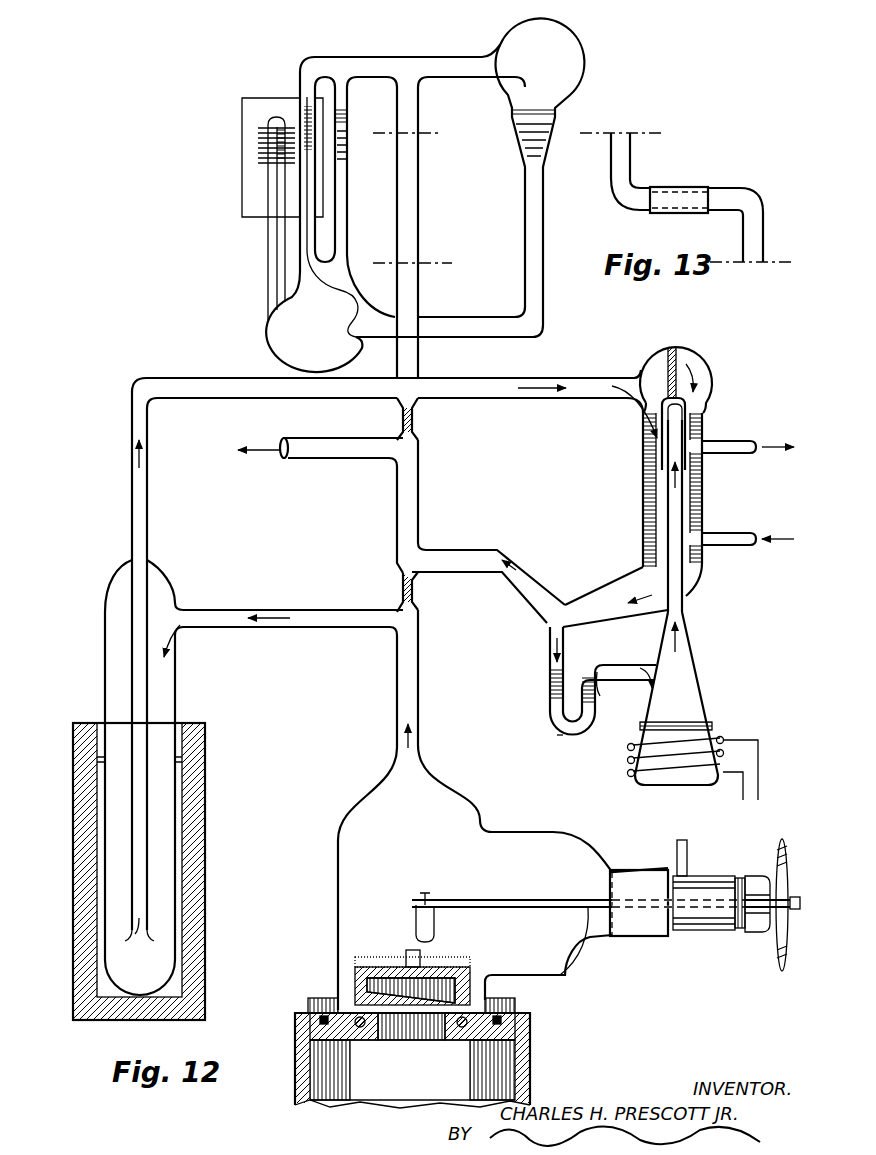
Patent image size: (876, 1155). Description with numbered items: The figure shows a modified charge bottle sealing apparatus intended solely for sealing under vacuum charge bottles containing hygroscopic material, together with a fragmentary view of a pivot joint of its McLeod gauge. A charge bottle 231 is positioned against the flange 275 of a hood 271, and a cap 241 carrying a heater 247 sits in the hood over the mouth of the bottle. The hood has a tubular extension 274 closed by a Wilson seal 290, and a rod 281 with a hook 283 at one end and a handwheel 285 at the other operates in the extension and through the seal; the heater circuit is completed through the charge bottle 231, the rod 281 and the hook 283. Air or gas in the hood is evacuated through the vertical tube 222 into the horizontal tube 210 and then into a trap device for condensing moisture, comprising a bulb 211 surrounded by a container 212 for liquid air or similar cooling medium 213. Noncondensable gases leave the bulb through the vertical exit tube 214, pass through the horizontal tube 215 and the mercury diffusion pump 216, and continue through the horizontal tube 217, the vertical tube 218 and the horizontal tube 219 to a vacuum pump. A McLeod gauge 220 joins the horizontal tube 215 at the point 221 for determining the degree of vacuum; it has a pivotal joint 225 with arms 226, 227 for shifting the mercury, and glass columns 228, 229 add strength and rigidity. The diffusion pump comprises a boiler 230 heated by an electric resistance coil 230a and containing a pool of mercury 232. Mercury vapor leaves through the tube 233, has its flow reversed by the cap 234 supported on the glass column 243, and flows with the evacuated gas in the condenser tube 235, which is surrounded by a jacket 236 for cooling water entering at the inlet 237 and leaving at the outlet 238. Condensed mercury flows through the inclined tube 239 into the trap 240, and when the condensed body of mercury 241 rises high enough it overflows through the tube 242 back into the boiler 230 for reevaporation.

In FIG. 12, the horizontal tube 210 is at (282, 630).
In FIG. 12, the bulb 211 is at (168, 658).
In FIG. 12, the container 212 is at (197, 757).
In FIG. 12, the cooling medium 213 is at (180, 773).
In FIG. 12, the vertical exit tube 214 is at (150, 595).
In FIG. 12, the horizontal tube 215 is at (205, 395).
In FIG. 12, the mercury diffusion pump 216 is at (712, 377).
In FIG. 12, the horizontal tube 217 is at (470, 553).
In FIG. 12, the vertical tube 218 is at (414, 490).
In FIG. 12, the horizontal tube 219 is at (335, 460).
In FIG. 12, the McLeod gauge 220 is at (290, 86).
In FIG. 12, the point 221 is at (426, 376).
In FIG. 12, the vertical tube 222 is at (420, 668).
In FIG. 12, the pivotal joint 225 is at (412, 203).
In FIG. 13, the pivotal joint 225 is at (683, 187).
In FIG. 12, the arm of the joint 226 is at (412, 160).
In FIG. 13, the arm of the joint 226 is at (628, 150).
In FIG. 12, the arm of the joint 227 is at (412, 241).
In FIG. 13, the arm of the joint 227 is at (740, 188).
In FIG. 12, the glass column 228 is at (414, 430).
In FIG. 12, the glass column 229 is at (414, 596).
In FIG. 12, the boiler 230 is at (700, 690).
In FIG. 12, the electric resistance coil 230a is at (628, 756).
In FIG. 12, the charge bottle 231 is at (535, 1068).
In FIG. 12, the pool of mercury 232 is at (693, 725).
In FIG. 12, the tube 233 is at (690, 603).
In FIG. 12, the cap 234 is at (700, 396).
In FIG. 12, the condenser tube 235 is at (648, 468).
In FIG. 12, the jacket 236 is at (700, 480).
In FIG. 12, the inlet 237 is at (728, 533).
In FIG. 12, the outlet 238 is at (720, 440).
In FIG. 12, the inclined tube 239 is at (596, 603).
In FIG. 12, the trap 240 is at (550, 704).
In FIG. 12, the cap 241 is at (555, 724).
In FIG. 12, the tube 242 is at (614, 690).
In FIG. 12, the glass column 243 is at (680, 356).
In FIG. 12, the heater 247 is at (365, 958).
In FIG. 12, the hood 271 is at (335, 836).
In FIG. 12, the tubular extension 274 is at (570, 858).
In FIG. 12, the flange 275 is at (312, 1005).
In FIG. 12, the rod 281 is at (580, 975).
In FIG. 12, the hook 283 is at (437, 928).
In FIG. 12, the handwheel 285 is at (780, 955).
In FIG. 12, the Wilson seal 290 is at (703, 938).